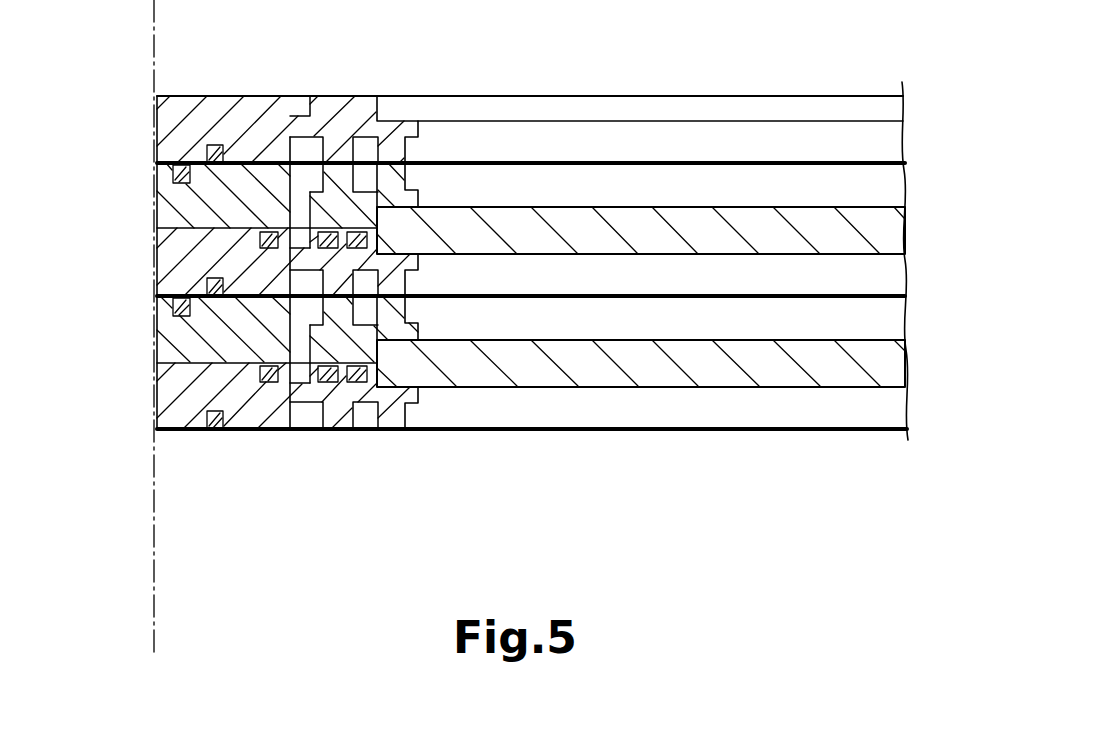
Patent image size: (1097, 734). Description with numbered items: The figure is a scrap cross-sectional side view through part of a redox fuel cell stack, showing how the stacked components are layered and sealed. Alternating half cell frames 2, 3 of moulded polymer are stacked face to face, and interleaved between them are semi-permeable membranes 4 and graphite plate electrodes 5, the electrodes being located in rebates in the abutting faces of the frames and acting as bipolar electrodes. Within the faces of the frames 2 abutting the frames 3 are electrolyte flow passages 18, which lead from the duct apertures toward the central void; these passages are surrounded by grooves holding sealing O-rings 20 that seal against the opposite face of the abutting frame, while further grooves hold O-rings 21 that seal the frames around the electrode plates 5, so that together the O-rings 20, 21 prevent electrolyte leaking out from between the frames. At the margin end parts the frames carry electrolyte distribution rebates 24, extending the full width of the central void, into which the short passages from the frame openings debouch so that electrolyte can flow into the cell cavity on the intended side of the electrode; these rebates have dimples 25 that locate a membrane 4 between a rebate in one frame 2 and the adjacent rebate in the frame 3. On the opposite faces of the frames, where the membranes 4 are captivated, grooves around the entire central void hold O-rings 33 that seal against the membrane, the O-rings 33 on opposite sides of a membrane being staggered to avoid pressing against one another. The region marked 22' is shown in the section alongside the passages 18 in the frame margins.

The half cell frame 2 is at (247, 415).
The half cell frame 3 is at (187, 200).
The semi-permeable membrane 4 is at (738, 162).
The graphite plate electrode 5 is at (785, 230).
The electrolyte flow passage 18 is at (298, 243).
The sealing O-ring 20 is at (327, 384).
The O-ring 21 is at (358, 384).
The channel 22' is at (184, 283).
The electrolyte distribution rebate 24 is at (409, 186).
The dimple 25 is at (393, 152).
The O-ring 33 is at (182, 165).